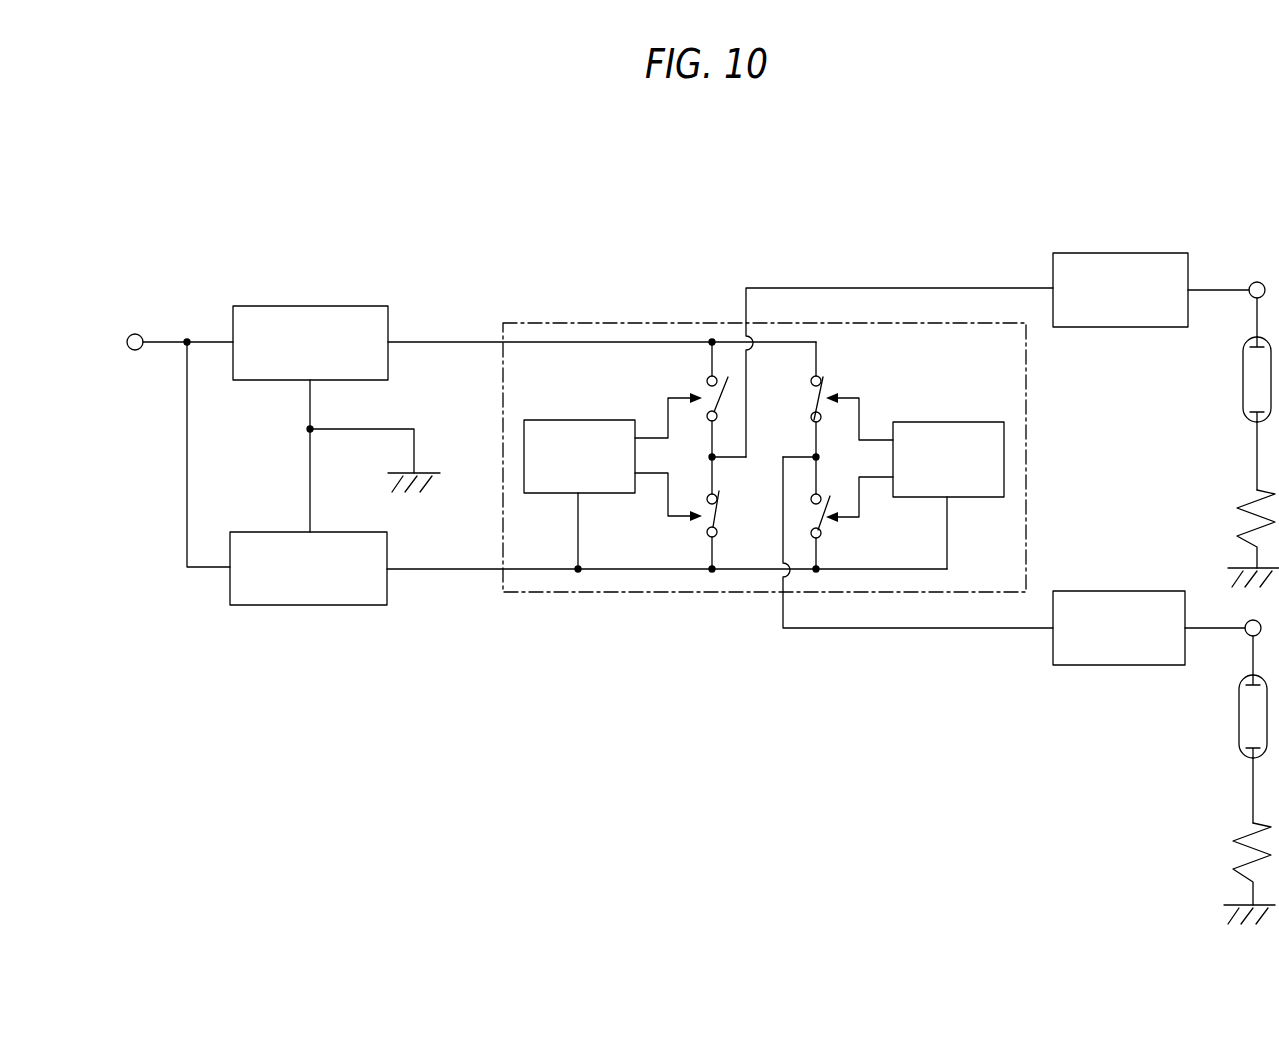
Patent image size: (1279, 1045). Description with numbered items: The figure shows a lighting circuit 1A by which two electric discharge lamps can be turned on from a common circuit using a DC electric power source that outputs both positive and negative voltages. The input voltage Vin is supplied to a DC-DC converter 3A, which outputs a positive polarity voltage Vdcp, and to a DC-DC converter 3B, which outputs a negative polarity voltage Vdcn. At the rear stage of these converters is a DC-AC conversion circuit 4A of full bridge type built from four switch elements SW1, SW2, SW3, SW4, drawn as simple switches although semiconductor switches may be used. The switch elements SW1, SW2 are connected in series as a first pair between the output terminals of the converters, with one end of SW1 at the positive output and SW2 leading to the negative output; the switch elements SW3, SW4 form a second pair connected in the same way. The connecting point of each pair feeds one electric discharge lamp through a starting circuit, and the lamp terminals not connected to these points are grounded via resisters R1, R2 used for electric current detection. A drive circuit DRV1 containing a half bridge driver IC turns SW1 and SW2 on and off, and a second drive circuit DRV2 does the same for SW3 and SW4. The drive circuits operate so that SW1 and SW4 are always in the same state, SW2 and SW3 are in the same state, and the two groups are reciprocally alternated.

The lighting circuit 1A is at (825, 235).
The DC-DC converter 3A is at (311, 306).
The DC-DC converter 3B is at (256, 532).
The DC-AC conversion circuit 4A is at (633, 323).
The drive circuit DRV1 is at (599, 404).
The drive circuit DRV2 is at (969, 406).
The switch element SW1 is at (692, 418).
The switch element SW2 is at (687, 530).
The switch element SW3 is at (842, 418).
The switch element SW4 is at (842, 531).
The resister R1 is at (1238, 538).
The resister R2 is at (1234, 873).
The input voltage Vin is at (177, 433).
The positive DC voltage Vdcp is at (602, 329).
The negative DC voltage Vdcn is at (667, 583).